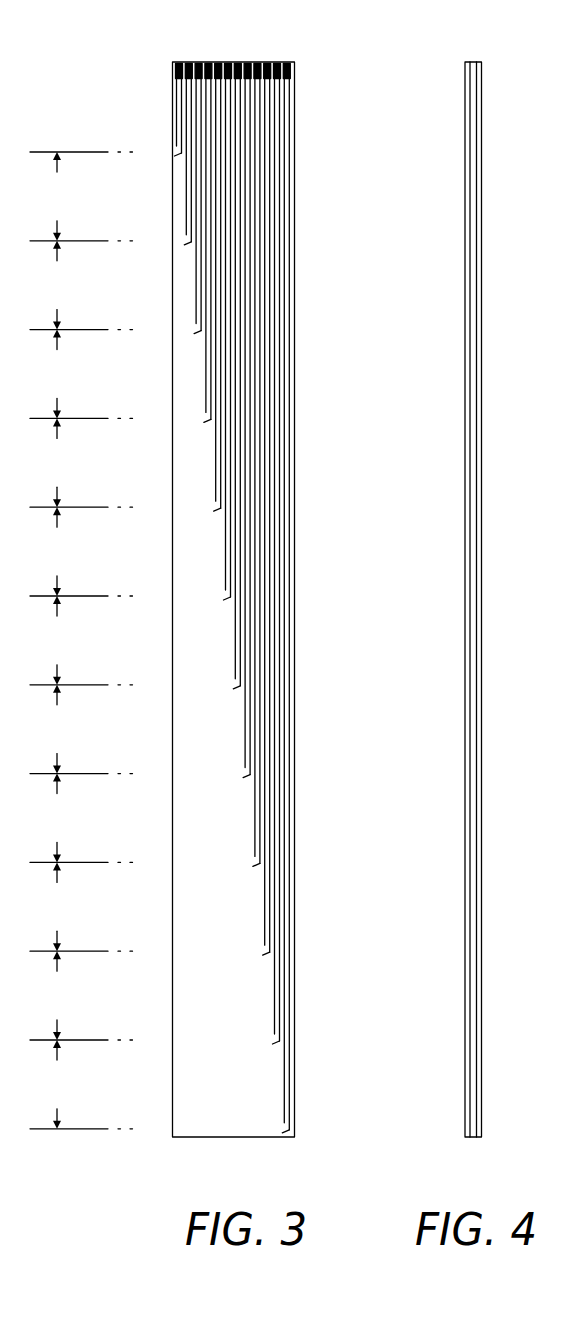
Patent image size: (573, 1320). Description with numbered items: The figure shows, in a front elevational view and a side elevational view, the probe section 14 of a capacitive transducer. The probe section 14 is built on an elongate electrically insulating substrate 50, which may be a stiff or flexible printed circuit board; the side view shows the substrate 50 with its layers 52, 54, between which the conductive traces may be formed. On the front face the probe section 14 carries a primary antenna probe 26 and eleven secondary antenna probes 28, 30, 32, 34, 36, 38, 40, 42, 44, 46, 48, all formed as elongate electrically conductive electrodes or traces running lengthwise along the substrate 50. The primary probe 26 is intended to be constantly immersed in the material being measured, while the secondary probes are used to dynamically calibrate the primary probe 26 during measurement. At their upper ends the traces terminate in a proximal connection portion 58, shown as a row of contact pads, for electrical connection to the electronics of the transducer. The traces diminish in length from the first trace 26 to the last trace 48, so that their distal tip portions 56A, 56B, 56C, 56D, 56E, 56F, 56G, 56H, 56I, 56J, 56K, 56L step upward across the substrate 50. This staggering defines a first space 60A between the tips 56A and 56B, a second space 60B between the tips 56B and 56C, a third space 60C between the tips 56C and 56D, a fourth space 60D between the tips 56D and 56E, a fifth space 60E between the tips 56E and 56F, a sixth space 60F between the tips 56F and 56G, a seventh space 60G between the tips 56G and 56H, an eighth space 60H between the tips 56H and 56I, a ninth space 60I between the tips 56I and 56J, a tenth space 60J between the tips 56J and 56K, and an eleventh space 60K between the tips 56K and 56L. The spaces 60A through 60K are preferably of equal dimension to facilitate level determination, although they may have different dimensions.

In FIG. 3, the probe section 14 is at (98, 63).
In FIG. 4, the probe section 14 is at (438, 66).
In FIG. 3, the primary antenna probe 26 is at (284, 1093).
In FIG. 3, the secondary antenna probe 28 is at (274, 1003).
In FIG. 3, the secondary antenna probe 30 is at (265, 913).
In FIG. 3, the secondary antenna probe 32 is at (255, 824).
In FIG. 3, the secondary antenna probe 34 is at (245, 734).
In FIG. 3, the secondary antenna probe 36 is at (235, 645).
In FIG. 3, the secondary antenna probe 38 is at (226, 555).
In FIG. 3, the secondary antenna probe 40 is at (216, 465).
In FIG. 3, the secondary antenna probe 42 is at (206, 376).
In FIG. 3, the secondary antenna probe 44 is at (196, 286).
In FIG. 3, the secondary antenna probe 46 is at (186, 197).
In FIG. 3, the secondary antenna probe 48 is at (176, 107).
In FIG. 3, the electrically insulating substrate 50 is at (209, 1123).
In FIG. 4, the electrically insulating substrate 50 is at (482, 282).
In FIG. 4, the layer 52 is at (470, 230).
In FIG. 4, the layer 54 is at (477, 170).
In FIG. 3, the distal tip portion 56A is at (290, 1131).
In FIG. 3, the distal tip portion 56B is at (272, 1044).
In FIG. 3, the distal tip portion 56C is at (263, 955).
In FIG. 3, the distal tip portion 56D is at (253, 866).
In FIG. 3, the distal tip portion 56E is at (243, 778).
In FIG. 3, the distal tip portion 56F is at (233, 689).
In FIG. 3, the distal tip portion 56G is at (224, 600).
In FIG. 3, the distal tip portion 56H is at (214, 511).
In FIG. 3, the distal tip portion 56I is at (204, 422).
In FIG. 3, the distal tip portion 56J is at (194, 334).
In FIG. 3, the distal tip portion 56K is at (184, 245).
In FIG. 3, the distal tip portion 56L is at (174, 156).
In FIG. 3, the proximal connection portion 58 is at (287, 62).
In FIG. 3, the first space 60A is at (81, 1084).
In FIG. 3, the second space 60B is at (81, 995).
In FIG. 3, the third space 60C is at (81, 906).
In FIG. 3, the fourth space 60D is at (81, 818).
In FIG. 3, the fifth space 60E is at (81, 729).
In FIG. 3, the sixth space 60F is at (81, 640).
In FIG. 3, the seventh space 60G is at (81, 551).
In FIG. 3, the eighth space 60H is at (81, 462).
In FIG. 3, the ninth space 60I is at (81, 374).
In FIG. 3, the tenth space 60J is at (81, 285).
In FIG. 3, the eleventh space 60K is at (81, 196).